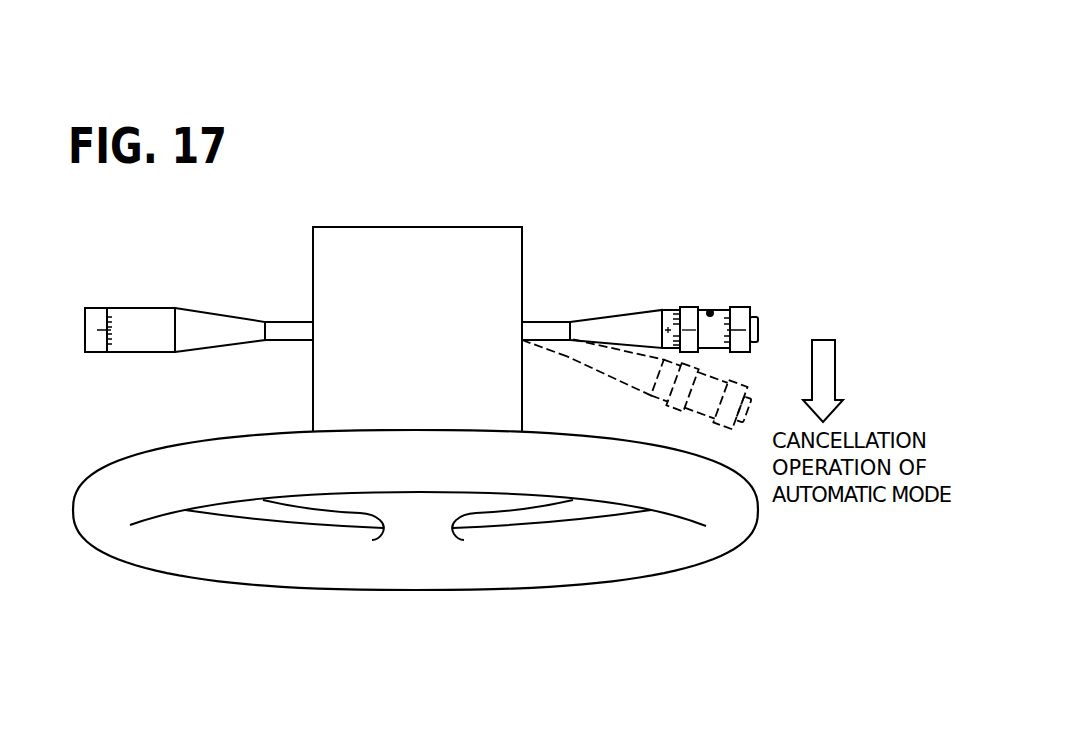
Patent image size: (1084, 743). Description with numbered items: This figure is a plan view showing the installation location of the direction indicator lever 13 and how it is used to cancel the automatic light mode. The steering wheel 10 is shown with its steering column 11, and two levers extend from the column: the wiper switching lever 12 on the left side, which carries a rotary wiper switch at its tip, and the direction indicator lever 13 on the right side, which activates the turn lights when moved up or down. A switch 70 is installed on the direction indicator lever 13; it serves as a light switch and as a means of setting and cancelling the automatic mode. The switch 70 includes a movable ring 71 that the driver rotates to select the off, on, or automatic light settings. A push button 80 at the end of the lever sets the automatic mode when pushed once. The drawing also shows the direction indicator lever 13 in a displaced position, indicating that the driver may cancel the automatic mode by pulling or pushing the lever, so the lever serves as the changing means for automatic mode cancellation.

The steering wheel 10 is at (612, 583).
The steering column 11 is at (522, 237).
The wiper switching lever 12 is at (147, 308).
The direction indicator lever 13 is at (652, 325).
The switch 70 is at (731, 272).
The movable ring 71 is at (675, 282).
The push button 80 is at (757, 317).